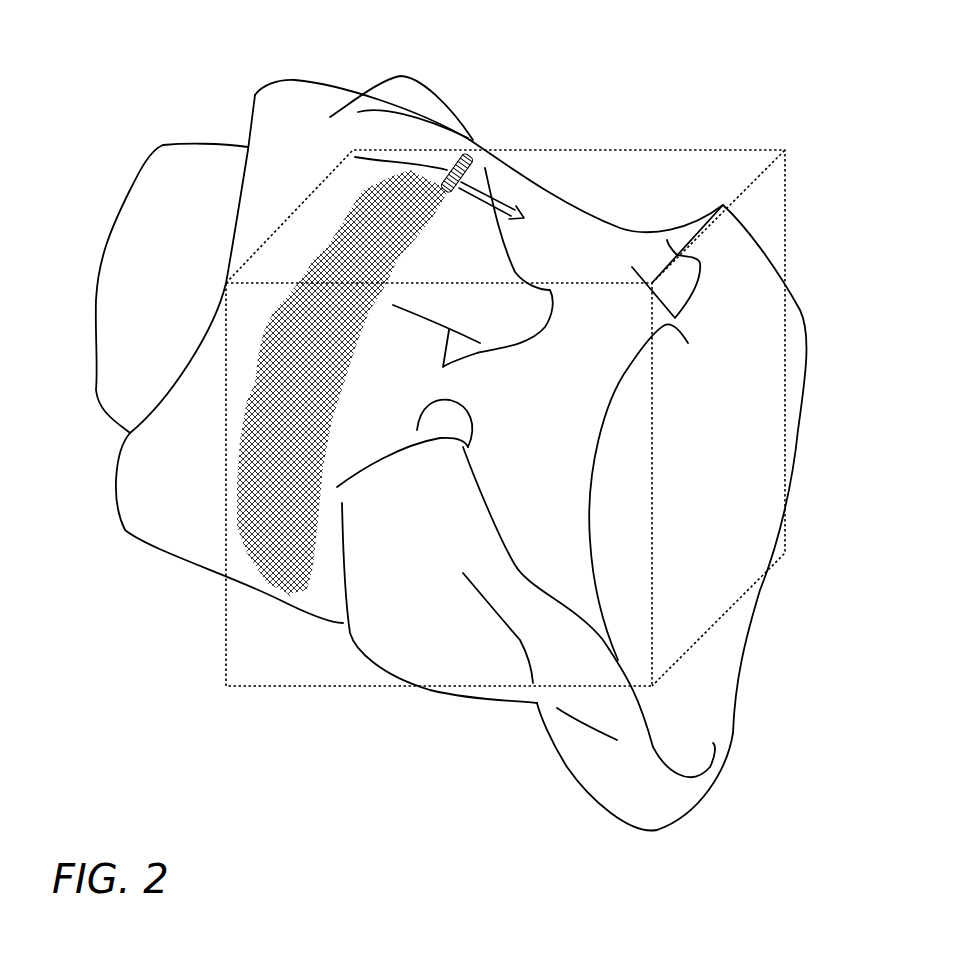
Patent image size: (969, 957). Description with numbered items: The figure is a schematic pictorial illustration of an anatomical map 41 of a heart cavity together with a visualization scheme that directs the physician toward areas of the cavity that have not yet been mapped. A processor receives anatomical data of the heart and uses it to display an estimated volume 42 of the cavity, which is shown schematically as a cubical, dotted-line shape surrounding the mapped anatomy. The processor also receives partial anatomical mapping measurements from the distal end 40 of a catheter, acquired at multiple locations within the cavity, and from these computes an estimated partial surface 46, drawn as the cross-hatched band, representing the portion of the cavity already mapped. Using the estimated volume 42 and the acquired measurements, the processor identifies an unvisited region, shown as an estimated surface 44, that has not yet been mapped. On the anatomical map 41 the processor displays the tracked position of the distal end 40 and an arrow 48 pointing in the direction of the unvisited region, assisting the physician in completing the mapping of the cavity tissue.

The distal end 40 is at (468, 168).
The anatomical map 41 is at (168, 89).
The estimated volume 42 is at (226, 625).
The estimated surface 44 is at (565, 517).
The estimated partial surface 46 is at (273, 384).
The arrow 48 is at (517, 208).